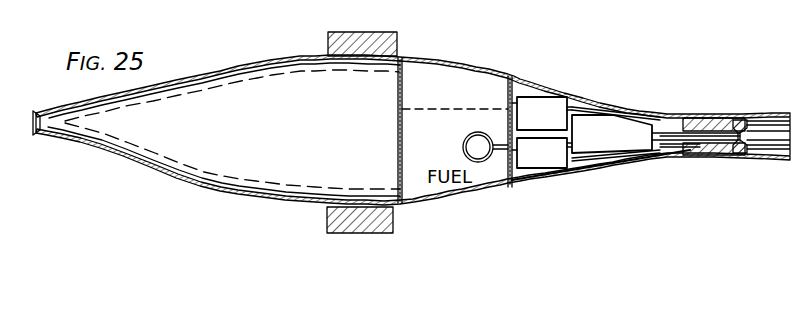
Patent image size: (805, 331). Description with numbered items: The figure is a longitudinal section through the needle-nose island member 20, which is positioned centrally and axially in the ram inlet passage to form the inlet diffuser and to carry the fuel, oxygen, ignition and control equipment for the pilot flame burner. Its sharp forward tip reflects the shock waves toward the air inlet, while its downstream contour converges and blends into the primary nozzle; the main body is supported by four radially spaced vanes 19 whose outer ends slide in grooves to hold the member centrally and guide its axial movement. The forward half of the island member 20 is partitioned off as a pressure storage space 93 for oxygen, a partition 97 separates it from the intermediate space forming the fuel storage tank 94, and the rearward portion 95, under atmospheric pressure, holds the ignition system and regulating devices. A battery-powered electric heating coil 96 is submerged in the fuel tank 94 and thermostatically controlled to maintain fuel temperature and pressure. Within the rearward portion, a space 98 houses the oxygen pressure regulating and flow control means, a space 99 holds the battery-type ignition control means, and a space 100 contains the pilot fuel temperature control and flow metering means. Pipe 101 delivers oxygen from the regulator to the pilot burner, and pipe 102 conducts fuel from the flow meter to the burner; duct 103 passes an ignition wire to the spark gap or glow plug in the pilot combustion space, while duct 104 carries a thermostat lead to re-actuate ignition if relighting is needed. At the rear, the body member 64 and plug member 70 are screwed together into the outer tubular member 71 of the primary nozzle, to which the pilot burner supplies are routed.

The radially spaced vanes 19 is at (327, 216).
The island member 20 is at (300, 134).
The body member 64 is at (700, 117).
The plug member 70 is at (729, 119).
The outer tubular member 71 is at (763, 113).
The pressure storage space 93 is at (152, 172).
The fuel storage tank 94 is at (462, 61).
The rearward portion 95 is at (625, 166).
The electric heating coil 96 is at (482, 157).
The bulkhead 97 is at (404, 205).
The space for oxygen pressure regulating and flow control means 98 is at (538, 108).
The space for battery-type ignition control means 99 is at (588, 124).
The space for pilot fuel temperature control and flow metering means 100 is at (551, 160).
The oxygen pipe 101 is at (605, 108).
The fuel pipe 102 is at (650, 164).
The ignition wire duct 103 is at (672, 156).
The thermostat lead duct 104 is at (663, 131).